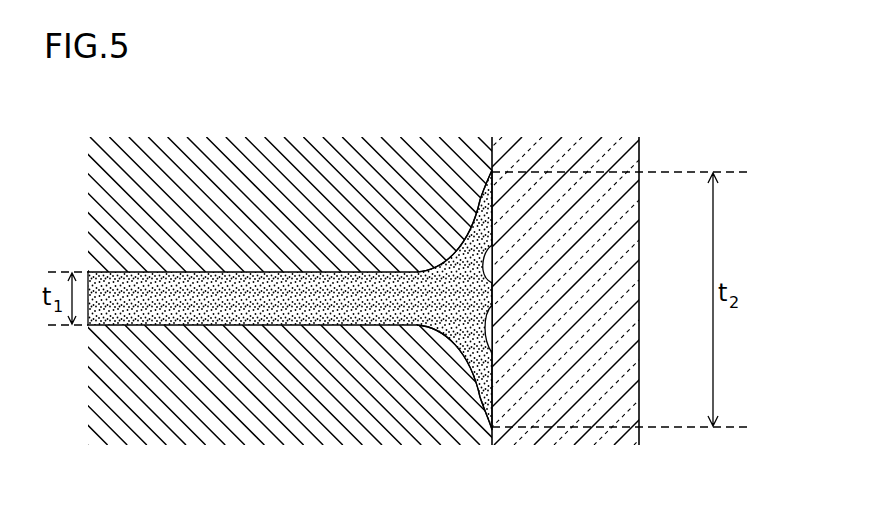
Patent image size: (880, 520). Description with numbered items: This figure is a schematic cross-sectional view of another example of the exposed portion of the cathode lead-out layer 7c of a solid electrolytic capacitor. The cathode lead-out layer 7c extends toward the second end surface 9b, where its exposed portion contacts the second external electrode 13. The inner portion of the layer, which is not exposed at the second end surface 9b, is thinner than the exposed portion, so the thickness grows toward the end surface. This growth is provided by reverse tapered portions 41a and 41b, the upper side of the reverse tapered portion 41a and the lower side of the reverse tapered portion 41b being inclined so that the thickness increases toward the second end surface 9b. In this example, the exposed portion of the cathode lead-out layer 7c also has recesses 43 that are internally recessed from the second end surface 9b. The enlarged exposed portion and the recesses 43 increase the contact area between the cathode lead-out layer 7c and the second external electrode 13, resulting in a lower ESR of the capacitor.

The cathode lead-out layer 7c is at (300, 272).
The reverse tapered portion 41a is at (472, 232).
The reverse tapered portion 41b is at (470, 362).
The second end surface 9b is at (494, 212).
The recesses 43 is at (487, 263).
The second external electrode 13 is at (620, 388).